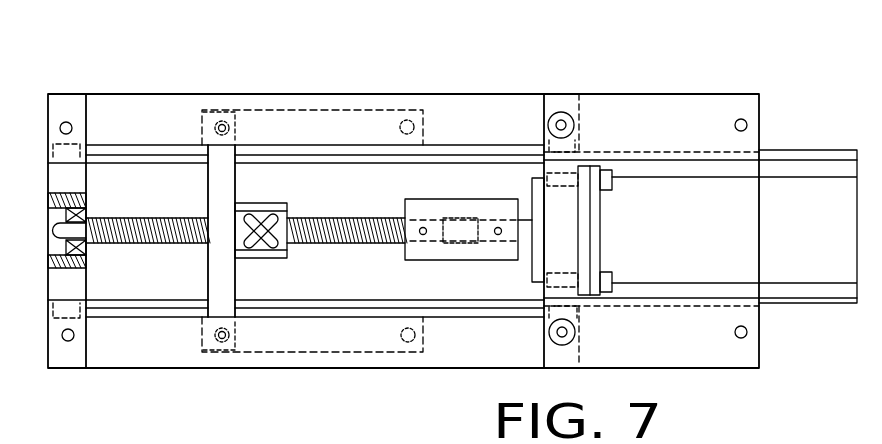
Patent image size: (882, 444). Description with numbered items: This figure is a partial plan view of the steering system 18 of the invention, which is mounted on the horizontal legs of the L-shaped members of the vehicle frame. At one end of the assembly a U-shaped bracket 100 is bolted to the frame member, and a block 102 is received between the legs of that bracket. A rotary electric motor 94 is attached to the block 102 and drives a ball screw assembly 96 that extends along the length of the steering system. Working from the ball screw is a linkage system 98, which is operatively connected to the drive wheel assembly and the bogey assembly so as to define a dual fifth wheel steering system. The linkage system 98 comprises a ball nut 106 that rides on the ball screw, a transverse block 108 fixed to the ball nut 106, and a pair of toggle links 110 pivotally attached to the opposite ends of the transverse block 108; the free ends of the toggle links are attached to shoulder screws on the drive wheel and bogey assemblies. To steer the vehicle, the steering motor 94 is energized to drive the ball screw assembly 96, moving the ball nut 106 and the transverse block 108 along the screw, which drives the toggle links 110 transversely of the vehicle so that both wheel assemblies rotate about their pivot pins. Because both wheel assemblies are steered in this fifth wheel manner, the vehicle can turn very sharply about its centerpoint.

The steering system 18 is at (447, 93).
The rotary electric motor 94 is at (734, 226).
The ball screw assembly 96 is at (344, 215).
The linkage system 98 is at (272, 108).
The U-shaped bracket 100 is at (708, 93).
The block 102 is at (544, 291).
The ball nut 106 is at (259, 203).
The transverse block 108 is at (208, 273).
The toggle links 110 is at (349, 108).